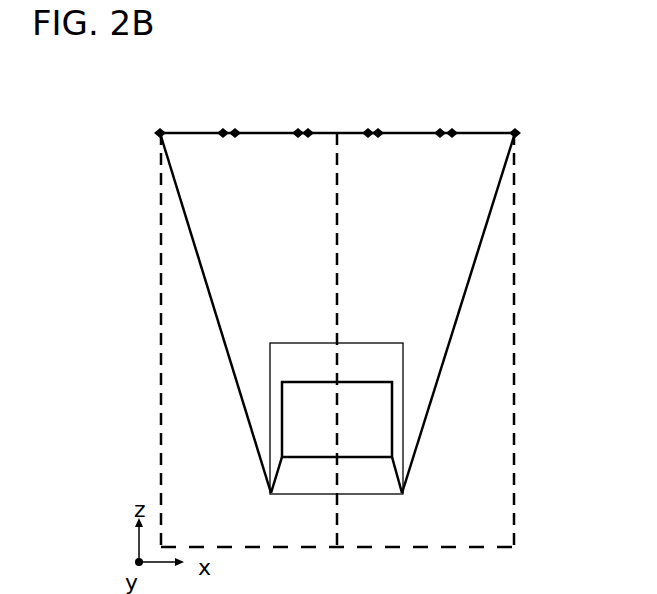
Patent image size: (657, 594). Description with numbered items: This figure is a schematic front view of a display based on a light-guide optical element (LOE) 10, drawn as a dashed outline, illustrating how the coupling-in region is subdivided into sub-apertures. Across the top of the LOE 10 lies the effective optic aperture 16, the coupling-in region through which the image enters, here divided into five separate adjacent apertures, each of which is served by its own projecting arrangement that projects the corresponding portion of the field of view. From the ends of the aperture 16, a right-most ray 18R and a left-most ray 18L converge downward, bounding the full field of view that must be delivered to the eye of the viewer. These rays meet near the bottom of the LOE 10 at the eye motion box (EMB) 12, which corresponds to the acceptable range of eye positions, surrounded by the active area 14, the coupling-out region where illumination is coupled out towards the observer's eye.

The light-guide optical element (LOE) 10 is at (514, 520).
The eye motion box (EMB) 12 is at (392, 417).
The active area 14 is at (403, 442).
The effective optic aperture 16 is at (500, 130).
The left-most ray 18L is at (212, 310).
The right-most ray 18R is at (482, 233).